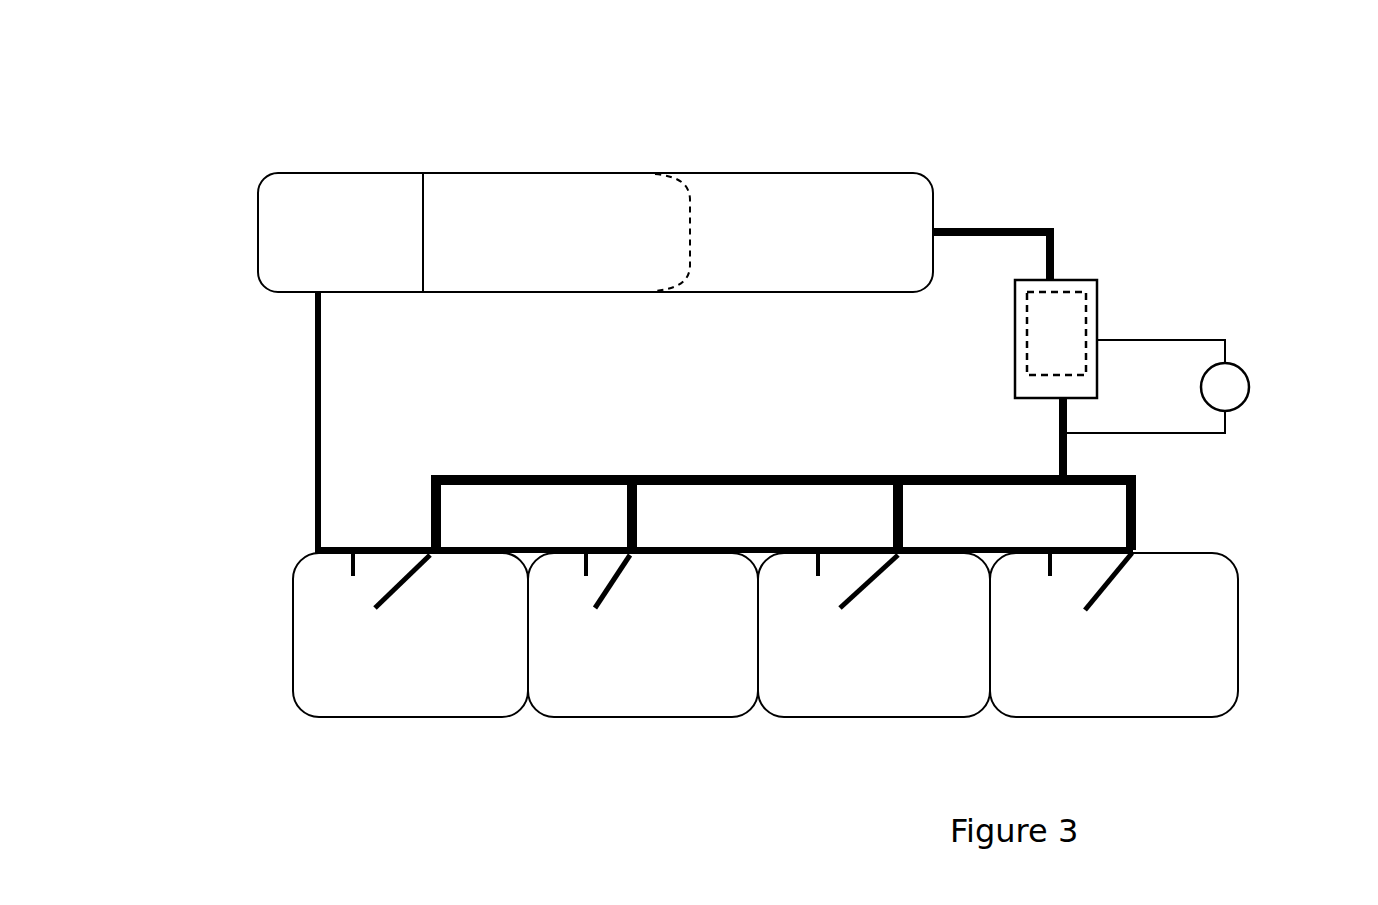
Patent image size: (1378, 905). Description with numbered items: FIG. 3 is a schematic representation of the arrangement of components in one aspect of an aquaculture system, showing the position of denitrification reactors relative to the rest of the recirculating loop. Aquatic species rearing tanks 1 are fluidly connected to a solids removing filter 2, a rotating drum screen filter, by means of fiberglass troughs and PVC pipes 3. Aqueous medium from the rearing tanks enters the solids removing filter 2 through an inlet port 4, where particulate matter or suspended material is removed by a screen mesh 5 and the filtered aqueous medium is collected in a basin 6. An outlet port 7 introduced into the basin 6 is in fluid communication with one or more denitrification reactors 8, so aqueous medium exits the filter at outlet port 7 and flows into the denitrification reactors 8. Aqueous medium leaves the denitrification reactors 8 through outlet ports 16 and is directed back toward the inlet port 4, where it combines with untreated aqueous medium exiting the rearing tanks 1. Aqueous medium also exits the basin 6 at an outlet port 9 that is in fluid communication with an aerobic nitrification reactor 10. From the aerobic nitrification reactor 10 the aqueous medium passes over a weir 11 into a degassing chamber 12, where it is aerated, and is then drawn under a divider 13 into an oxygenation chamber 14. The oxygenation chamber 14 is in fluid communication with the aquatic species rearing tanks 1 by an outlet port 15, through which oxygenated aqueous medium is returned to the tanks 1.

The aquatic species rearing tanks 1 is at (580, 735).
The solids removing filter 2 is at (1115, 378).
The fiberglass troughs and PVC pipes 3 is at (847, 465).
The inlet port 4 is at (1040, 423).
The screen mesh 5 is at (1064, 314).
The basin 6 is at (1087, 263).
The outlet port 7 is at (1147, 328).
The denitrification reactors 8 is at (1252, 367).
The outlet port 9 is at (979, 207).
The aerobic nitrification reactor 10 is at (756, 165).
The weir 11 is at (629, 164).
The degassing chamber 12 is at (521, 313).
The divider 13 is at (422, 158).
The oxygenation chamber 14 is at (250, 237).
The outlet port 15 is at (337, 395).
The outlet ports 16 is at (1170, 455).